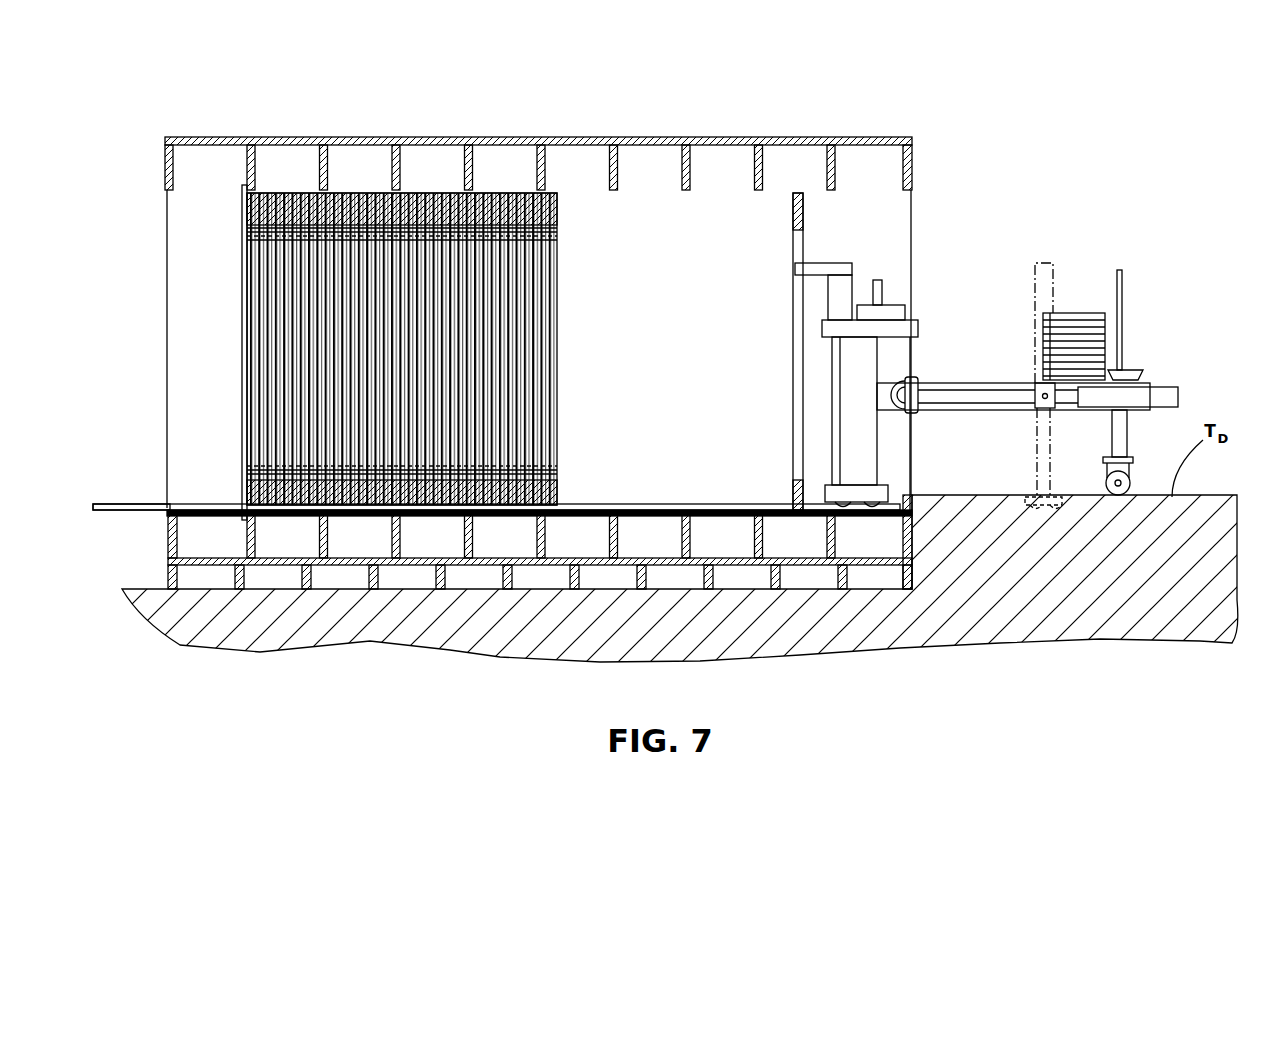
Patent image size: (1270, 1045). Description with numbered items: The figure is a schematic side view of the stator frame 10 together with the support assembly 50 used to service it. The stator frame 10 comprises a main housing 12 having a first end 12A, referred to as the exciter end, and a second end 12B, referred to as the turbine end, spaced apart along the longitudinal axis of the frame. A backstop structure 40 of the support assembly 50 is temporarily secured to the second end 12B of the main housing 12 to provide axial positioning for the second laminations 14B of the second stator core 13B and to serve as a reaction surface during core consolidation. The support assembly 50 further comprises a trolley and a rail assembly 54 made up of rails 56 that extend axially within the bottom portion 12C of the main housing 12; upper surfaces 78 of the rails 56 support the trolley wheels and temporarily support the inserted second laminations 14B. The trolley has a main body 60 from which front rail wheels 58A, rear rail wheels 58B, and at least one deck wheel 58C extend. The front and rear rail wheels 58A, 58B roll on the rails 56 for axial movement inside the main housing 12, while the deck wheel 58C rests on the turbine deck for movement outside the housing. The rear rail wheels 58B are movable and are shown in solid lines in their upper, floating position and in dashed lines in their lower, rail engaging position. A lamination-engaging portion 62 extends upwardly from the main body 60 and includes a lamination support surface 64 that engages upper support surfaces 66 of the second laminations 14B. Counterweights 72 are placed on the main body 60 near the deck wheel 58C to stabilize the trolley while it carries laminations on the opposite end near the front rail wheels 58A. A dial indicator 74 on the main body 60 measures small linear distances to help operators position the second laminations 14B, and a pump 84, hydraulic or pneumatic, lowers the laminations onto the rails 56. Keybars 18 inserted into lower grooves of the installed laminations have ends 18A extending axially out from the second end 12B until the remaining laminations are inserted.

The stator frame 10 is at (658, 105).
The main housing 12 is at (567, 378).
The first end 12A is at (913, 165).
The second end 12B is at (167, 172).
The bottom portion 12C is at (655, 527).
The second stator core 13B is at (568, 282).
The second laminations 14B is at (796, 338).
The keybars 18 is at (208, 504).
The ends 18A is at (138, 504).
The backstop structure 40 is at (422, 349).
The support assembly 50 is at (663, 352).
The rail assembly 54 is at (780, 517).
The rails 56 is at (738, 511).
The front rail wheels 58A is at (845, 510).
The rear rail wheels 58B is at (907, 385).
The deck wheel 58C is at (1128, 493).
The main body 60 is at (990, 396).
The lamination-engaging portion 62 is at (803, 245).
The lamination support surface 64 is at (800, 215).
The upper support surfaces 66 is at (797, 230).
The counterweights 72 is at (1062, 322).
The dial indicator 74 is at (881, 292).
The upper surfaces 78 is at (590, 508).
The pump 84 is at (843, 290).